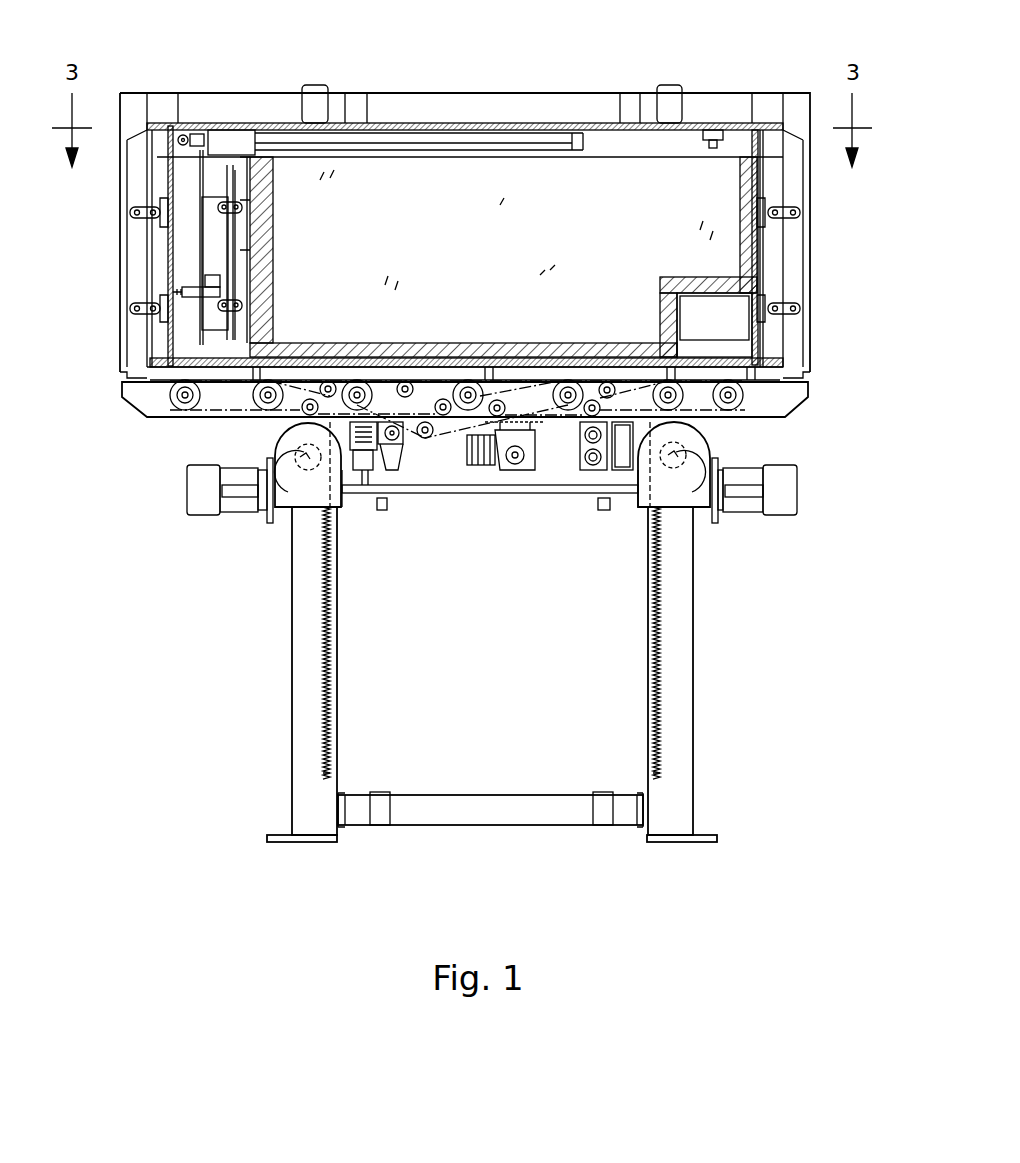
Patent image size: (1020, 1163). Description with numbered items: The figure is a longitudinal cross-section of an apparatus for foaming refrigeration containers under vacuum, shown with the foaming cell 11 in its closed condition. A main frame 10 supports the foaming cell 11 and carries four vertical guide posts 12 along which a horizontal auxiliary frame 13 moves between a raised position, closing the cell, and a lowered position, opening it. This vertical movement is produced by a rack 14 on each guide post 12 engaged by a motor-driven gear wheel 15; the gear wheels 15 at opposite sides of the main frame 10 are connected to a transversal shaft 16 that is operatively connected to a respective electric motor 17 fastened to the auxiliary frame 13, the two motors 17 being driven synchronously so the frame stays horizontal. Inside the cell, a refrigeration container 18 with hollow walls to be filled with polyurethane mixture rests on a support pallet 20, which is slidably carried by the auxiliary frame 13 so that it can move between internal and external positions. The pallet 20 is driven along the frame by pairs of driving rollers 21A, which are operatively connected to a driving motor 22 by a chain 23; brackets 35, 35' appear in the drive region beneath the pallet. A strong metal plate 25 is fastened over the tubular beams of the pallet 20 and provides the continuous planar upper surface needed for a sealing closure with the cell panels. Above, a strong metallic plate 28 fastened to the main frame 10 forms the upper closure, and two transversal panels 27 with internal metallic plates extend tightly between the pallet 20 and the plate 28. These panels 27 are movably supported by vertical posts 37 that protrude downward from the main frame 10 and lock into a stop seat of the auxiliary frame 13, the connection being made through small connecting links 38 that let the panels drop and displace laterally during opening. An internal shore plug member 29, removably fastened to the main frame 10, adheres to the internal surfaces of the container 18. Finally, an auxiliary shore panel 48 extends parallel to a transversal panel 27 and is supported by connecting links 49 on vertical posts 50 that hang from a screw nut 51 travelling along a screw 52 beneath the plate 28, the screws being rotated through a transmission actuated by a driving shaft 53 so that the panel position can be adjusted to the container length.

The main frame 10 is at (715, 107).
The foaming cell 11 is at (112, 202).
The vertical guide posts 12 is at (300, 658).
The auxiliary frame 13 is at (158, 408).
The rack 14 is at (325, 720).
The gear wheel 15 is at (280, 517).
The transversal shaft 16 is at (287, 442).
The electric motor 17 is at (203, 510).
The refrigeration container 18 is at (750, 267).
The support pallet 20 is at (165, 385).
The driving rollers 21A is at (182, 408).
The driving motor 22 is at (485, 470).
The chain 23 is at (562, 427).
The metal plate 25 is at (175, 345).
The transversal panels 27 is at (160, 272).
The metallic plate 28 is at (421, 125).
The shore plug member 29 is at (468, 265).
The bracket 35 is at (490, 496).
The pulley bracket 35' is at (416, 488).
The vertical posts 37 is at (130, 327).
The connecting link 38 is at (135, 215).
The auxiliary shore panel 48 is at (248, 240).
The connecting links 49 is at (222, 185).
The vertical posts 50 is at (215, 227).
The screw nut 51 is at (245, 142).
The screw 52 is at (510, 145).
The driving shaft 53 is at (183, 135).